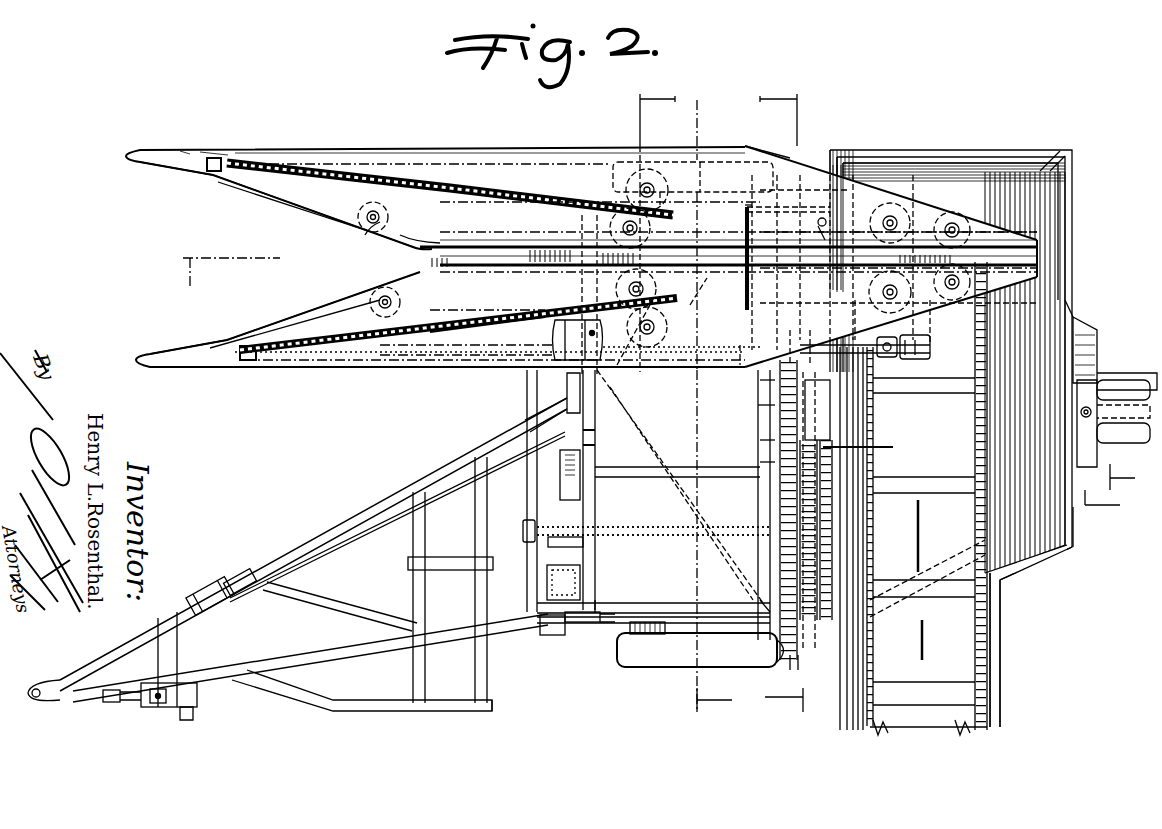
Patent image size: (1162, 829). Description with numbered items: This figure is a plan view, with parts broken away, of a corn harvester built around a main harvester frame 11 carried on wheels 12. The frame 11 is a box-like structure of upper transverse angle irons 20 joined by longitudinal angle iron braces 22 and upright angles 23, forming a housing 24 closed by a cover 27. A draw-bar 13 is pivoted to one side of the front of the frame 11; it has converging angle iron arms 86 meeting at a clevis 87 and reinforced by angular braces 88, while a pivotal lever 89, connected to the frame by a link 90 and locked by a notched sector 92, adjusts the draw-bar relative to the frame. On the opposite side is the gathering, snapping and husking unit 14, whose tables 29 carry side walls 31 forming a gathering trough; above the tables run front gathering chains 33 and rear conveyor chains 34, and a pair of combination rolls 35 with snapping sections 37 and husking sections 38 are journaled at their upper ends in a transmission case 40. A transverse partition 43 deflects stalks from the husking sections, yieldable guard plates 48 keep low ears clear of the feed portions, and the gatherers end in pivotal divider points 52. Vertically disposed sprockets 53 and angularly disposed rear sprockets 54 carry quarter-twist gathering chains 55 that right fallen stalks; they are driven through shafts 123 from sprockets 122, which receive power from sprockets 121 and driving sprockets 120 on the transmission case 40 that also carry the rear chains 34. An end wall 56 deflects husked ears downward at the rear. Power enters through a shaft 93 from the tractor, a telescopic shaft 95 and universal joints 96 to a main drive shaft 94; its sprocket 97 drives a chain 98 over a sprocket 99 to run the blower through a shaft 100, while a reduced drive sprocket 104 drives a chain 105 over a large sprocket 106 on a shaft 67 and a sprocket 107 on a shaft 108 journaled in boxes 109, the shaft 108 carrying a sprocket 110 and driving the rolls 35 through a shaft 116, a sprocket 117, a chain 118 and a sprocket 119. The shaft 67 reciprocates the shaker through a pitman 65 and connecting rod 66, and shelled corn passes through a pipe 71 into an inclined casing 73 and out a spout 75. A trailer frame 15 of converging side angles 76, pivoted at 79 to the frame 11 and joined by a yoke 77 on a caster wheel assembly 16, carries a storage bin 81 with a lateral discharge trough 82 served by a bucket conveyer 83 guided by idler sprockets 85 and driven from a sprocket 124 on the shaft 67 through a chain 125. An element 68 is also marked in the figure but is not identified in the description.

The main harvester frame 11 is at (608, 625).
The wheels 12 is at (726, 150).
The draw-bar 13 is at (283, 545).
The gathering, snapping and husking unit 14 is at (783, 148).
The trailer frame 15 is at (1092, 507).
The caster wheel assembly 16 is at (1135, 380).
The upper transverse angle irons 20 is at (758, 408).
The longitudinal angle iron braces 22 is at (630, 600).
The upright angles 23 is at (570, 610).
The housing 24 is at (653, 540).
The cover 27 is at (592, 542).
The tables 29 is at (388, 272).
The side walls 31 is at (295, 212).
The front gathering and conveyor chains 33 is at (428, 213).
The rear conveyor chains 34 is at (818, 208).
The combination rolls 35 is at (790, 250).
The snapping and stalk discharge sections 37 is at (712, 248).
The husking sections 38 is at (820, 250).
The transmission case 40 is at (985, 268).
The vertical transverse partition 43 is at (760, 205).
The yieldable guard plates 48 is at (528, 247).
The pivotal divider points 52 is at (176, 152).
The vertically disposed sprockets 53 is at (258, 342).
The rear sprockets 54 is at (613, 185).
The gathering chains 55 is at (455, 190).
The end wall 56 is at (1040, 242).
The pitman 65 is at (570, 500).
The connecting rod 66 is at (588, 430).
The shaft 67 is at (745, 462).
The bracket 68 is at (540, 512).
The pipe 71 is at (762, 570).
The conveyer casing 73 is at (870, 563).
The shelled corn delivery spout 75 is at (820, 437).
The side angles 76 is at (1080, 327).
The yoke 77 is at (1097, 345).
The pivotal connection 79 is at (727, 195).
The storage bin 81 is at (1075, 206).
The lateral discharge trough 82 is at (1004, 652).
The bucket conveyer 83 is at (952, 615).
The idler rollers or sprockets 85 is at (870, 535).
The angle iron arms 86 is at (398, 492).
The clevis 87 is at (573, 392).
The angular braces 88 is at (342, 592).
The pivotal lever 89 is at (222, 602).
The link 90 is at (365, 525).
The notched sector 92 is at (215, 615).
The power take-off shaft 93 is at (118, 702).
The main drive shaft 94 is at (655, 615).
The telescopic shaft 95 is at (362, 672).
The universal joints 96 is at (565, 640).
The sprocket 97 is at (773, 663).
The chain 98 is at (760, 382).
The sprocket 99 is at (755, 523).
The blower shaft 100 is at (672, 525).
The reduced drive sprocket 104 is at (795, 668).
The chain 105 is at (795, 385).
The large sprocket 106 is at (760, 440).
The sprocket 107 is at (792, 325).
The shaft 108 is at (745, 342).
The boxes 109 is at (745, 357).
The sprocket 110 is at (553, 340).
The shaft 116 is at (895, 352).
The sprocket 117 is at (930, 354).
The chain 118 is at (863, 315).
The sprocket 119 is at (935, 318).
The driving sprockets 120 is at (985, 228).
The sprockets 121 is at (680, 252).
The sprockets 122 is at (580, 282).
The shafts 123 is at (705, 200).
The sprocket 124 is at (868, 462).
The chain 125 is at (815, 705).